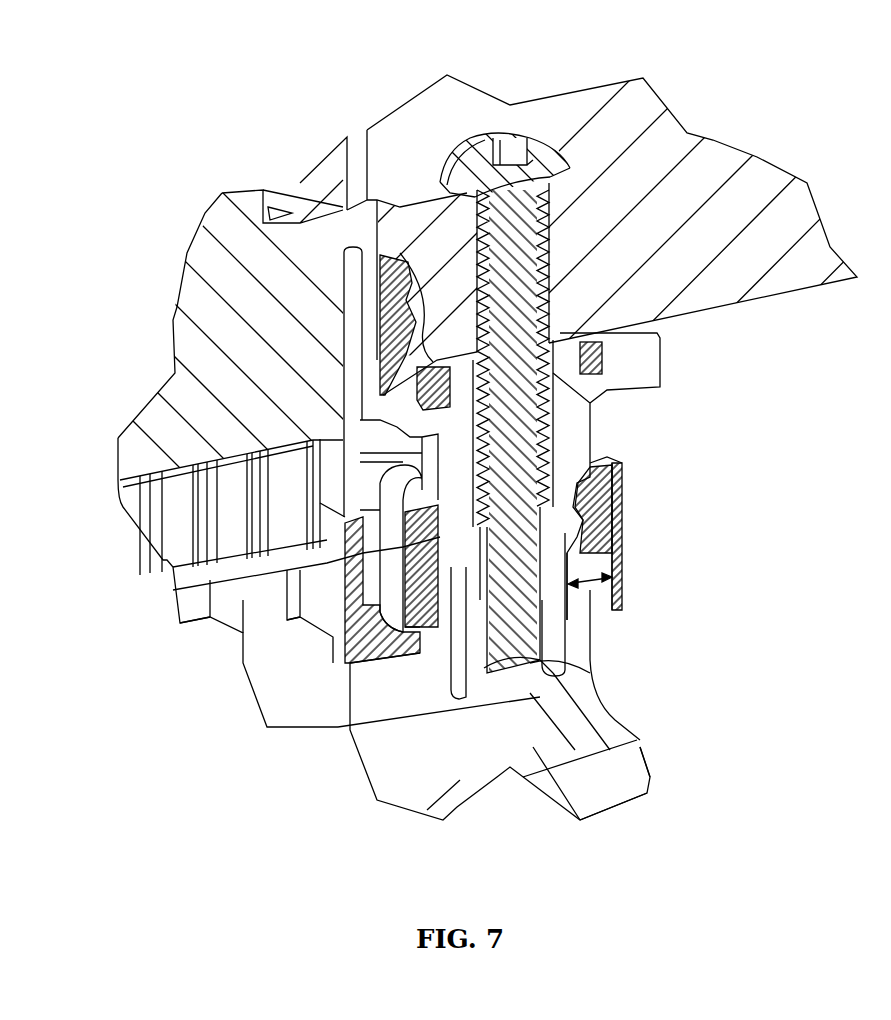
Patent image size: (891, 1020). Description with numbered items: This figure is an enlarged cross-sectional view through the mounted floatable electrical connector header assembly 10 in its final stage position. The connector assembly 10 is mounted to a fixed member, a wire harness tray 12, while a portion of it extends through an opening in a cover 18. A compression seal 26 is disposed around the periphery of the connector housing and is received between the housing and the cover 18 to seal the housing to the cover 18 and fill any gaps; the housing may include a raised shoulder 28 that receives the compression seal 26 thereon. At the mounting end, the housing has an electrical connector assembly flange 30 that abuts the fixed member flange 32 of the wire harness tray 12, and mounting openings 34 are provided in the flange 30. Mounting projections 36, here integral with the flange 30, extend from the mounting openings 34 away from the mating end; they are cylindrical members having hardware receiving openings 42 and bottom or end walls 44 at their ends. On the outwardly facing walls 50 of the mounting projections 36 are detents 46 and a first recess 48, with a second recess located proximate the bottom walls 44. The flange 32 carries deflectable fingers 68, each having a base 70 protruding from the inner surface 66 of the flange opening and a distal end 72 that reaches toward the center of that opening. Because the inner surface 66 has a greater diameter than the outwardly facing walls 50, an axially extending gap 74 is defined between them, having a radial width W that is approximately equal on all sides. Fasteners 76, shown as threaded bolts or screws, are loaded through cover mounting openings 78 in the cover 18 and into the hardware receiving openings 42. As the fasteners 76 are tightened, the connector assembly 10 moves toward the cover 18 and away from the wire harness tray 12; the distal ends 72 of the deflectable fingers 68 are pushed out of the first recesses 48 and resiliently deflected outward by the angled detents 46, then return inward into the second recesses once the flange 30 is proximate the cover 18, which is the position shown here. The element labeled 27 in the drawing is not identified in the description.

The floatable electrical connector header assembly 10 is at (172, 274).
The wire harness tray 12 is at (240, 706).
The cover 18 is at (785, 118).
The compression seal 26 is at (437, 358).
The recess in housing 27 is at (262, 218).
The raised shoulder 28 is at (380, 250).
The electrical connector assembly flange 30 is at (633, 377).
The fixed member flange 32 is at (627, 607).
The mounting openings 34 is at (662, 342).
The mounting projections 36 is at (623, 517).
The hardware receiving openings 42 is at (640, 747).
The bottom walls 44 is at (630, 797).
The detents 46 is at (445, 618).
The first recess 48 is at (578, 603).
The outwardly facing walls 50 is at (597, 437).
The inner surface 66 is at (593, 603).
The deflectable fingers 68 is at (623, 530).
The base 70 is at (623, 490).
The distal end 72 is at (623, 580).
The axially extending gap 74 is at (595, 627).
The fasteners 76 is at (503, 137).
The cover mounting openings 78 is at (553, 240).
The width W is at (627, 600).